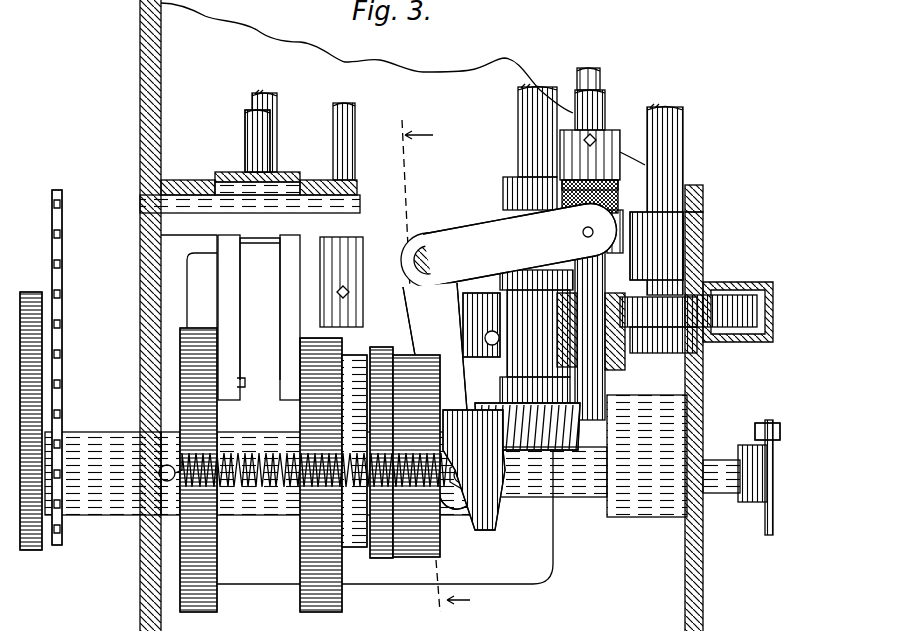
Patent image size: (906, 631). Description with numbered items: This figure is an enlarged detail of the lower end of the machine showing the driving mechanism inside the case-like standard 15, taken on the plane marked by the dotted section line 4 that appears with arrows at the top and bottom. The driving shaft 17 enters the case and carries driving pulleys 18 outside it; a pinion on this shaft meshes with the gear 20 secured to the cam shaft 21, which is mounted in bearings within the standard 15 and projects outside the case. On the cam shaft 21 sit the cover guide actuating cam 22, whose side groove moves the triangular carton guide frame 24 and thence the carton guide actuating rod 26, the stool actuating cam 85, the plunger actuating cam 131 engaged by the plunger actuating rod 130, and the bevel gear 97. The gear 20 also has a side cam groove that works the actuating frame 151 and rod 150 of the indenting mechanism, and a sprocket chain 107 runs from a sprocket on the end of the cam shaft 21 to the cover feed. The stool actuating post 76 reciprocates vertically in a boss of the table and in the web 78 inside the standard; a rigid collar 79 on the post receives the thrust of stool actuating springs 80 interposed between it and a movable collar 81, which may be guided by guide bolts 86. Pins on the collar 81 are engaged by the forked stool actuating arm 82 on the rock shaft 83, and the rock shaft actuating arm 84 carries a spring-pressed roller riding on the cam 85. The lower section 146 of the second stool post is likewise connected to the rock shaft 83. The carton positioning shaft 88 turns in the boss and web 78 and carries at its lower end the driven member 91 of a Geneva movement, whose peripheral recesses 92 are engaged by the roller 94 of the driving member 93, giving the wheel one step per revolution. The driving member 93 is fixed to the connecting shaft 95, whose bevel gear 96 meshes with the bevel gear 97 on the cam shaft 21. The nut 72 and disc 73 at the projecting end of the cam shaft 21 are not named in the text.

The section line 4- 4 is at (435, 363).
The standard 15 is at (700, 575).
The driving shaft 17 is at (700, 425).
The driving pulleys 18 is at (35, 300).
The gear 20 is at (212, 604).
The cam shaft 21 is at (538, 480).
The cover guide actuating cam 22 is at (316, 481).
The carton guide frame 24 is at (287, 292).
The carton guide actuating rod 26 is at (258, 118).
The nut 72 is at (780, 432).
The disc 73 is at (773, 520).
The stool actuating post 76 is at (605, 103).
The web 78 is at (680, 222).
The rigid collar 79 is at (600, 145).
The stool actuating springs 80 is at (603, 179).
The movable collar 81 is at (700, 202).
The forked stool actuating arm 82 is at (470, 224).
The rock shaft 83 is at (428, 246).
The rock shaft actuating arm 84 is at (420, 318).
The stool actuating cam 85 is at (420, 552).
The guide bolts 86 is at (610, 205).
The carton positioning shaft 88 is at (673, 118).
The driven member 91 is at (727, 300).
The recesses 92 is at (703, 340).
The driving member 93 is at (520, 295).
The roller 94 is at (470, 310).
The connecting shaft 95 is at (530, 133).
The bevel gear 96 is at (565, 450).
The bevel gear 97 is at (483, 530).
The sprocket chain 107 is at (62, 357).
The plunger actuating rod 130 is at (355, 118).
The plunger actuating cam 131 is at (383, 555).
The lower section of stool actuating post 146 is at (604, 77).
The rod 150 is at (268, 100).
The actuating frame 151 is at (232, 313).